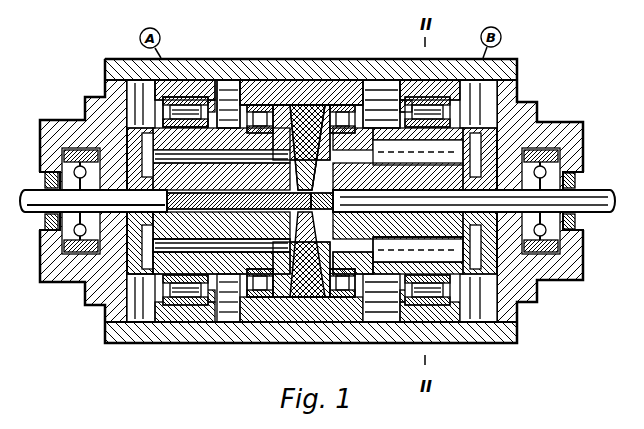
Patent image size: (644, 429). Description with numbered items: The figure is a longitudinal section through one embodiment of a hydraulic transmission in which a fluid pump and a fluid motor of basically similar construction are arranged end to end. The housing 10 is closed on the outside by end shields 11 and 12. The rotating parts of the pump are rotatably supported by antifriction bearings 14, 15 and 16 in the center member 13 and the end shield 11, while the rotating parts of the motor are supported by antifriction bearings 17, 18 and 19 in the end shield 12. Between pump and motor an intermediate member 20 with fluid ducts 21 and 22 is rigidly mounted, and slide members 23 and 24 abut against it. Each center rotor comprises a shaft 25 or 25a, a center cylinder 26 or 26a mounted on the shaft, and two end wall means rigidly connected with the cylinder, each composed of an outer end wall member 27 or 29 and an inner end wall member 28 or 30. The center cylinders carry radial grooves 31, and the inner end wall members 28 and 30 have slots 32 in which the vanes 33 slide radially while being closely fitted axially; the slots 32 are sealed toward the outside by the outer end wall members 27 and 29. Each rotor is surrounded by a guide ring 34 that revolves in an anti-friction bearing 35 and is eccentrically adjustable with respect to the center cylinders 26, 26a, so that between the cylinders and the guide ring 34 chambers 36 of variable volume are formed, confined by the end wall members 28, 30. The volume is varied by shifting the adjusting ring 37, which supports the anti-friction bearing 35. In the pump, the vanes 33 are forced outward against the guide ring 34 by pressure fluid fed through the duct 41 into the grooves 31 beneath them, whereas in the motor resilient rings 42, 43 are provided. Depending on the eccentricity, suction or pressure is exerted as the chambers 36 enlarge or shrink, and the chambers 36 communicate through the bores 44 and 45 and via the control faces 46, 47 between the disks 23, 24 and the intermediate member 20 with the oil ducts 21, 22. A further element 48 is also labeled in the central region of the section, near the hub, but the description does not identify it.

The housing 10 is at (345, 73).
The end shield 11 is at (100, 118).
The end shield 12 is at (523, 112).
The center member 13 is at (288, 112).
The antifriction bearing 14 is at (85, 140).
The antifriction bearing 15 is at (265, 100).
The antifriction bearing 16 is at (66, 160).
The antifriction bearing 17 is at (543, 128).
The antifriction bearing 18 is at (379, 100).
The antifriction bearing 19 is at (572, 163).
The intermediate member 20 is at (304, 135).
The fluid duct 21 is at (318, 130).
The fluid duct 22 is at (291, 320).
The slide member 23 is at (243, 322).
The slide member 24 is at (366, 328).
The shaft 25 is at (40, 206).
The shaft 25a is at (598, 213).
The center cylinder 26 is at (118, 60).
The center cylinder 26a is at (517, 325).
The outer end wall member 27 is at (87, 287).
The inner end wall member 28 is at (118, 112).
The outer end wall member 29 is at (225, 330).
The inner end wall member 30 is at (241, 100).
The radial groove 31 is at (110, 344).
The slot 32 is at (100, 303).
The vane 33 is at (112, 326).
The guide ring 34 is at (193, 84).
The anti-friction bearing 35 is at (143, 340).
The chamber 36 is at (229, 125).
The adjusting ring 37 is at (172, 98).
The duct 41 is at (150, 325).
The resilient ring 42 is at (402, 102).
The resilient ring 43 is at (520, 300).
The bore 44 is at (190, 328).
The bore 45 is at (410, 325).
The control face 46 is at (270, 322).
The control face 47 is at (336, 325).
The hub key 48 is at (311, 322).